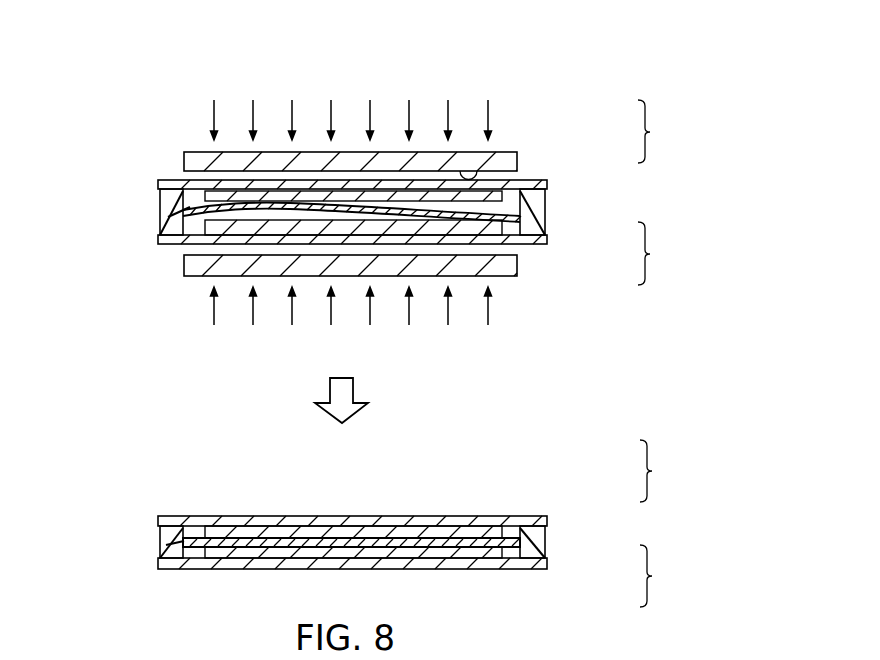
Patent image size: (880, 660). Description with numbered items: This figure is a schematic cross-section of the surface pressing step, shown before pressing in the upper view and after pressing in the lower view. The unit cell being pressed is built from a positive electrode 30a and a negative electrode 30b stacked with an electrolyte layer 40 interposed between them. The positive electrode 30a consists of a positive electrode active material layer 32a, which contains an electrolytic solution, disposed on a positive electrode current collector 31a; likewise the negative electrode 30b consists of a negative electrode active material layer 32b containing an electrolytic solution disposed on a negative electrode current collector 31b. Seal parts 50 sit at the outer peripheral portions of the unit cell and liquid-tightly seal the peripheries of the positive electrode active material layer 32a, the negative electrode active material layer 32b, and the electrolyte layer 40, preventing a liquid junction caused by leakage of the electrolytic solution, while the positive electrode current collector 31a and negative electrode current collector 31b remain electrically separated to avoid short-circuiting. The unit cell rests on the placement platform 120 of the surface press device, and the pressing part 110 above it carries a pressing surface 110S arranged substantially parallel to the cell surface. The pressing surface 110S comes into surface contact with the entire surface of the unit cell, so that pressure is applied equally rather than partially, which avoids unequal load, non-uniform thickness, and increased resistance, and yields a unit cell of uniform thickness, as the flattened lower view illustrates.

The pressing part 110 is at (205, 160).
The pressing surface 110S is at (467, 172).
The placement platform 120 is at (197, 263).
The positive electrode 30a is at (431, 301).
The negative electrode 30b is at (432, 413).
The positive electrode current collector 31a is at (545, 181).
The positive electrode active material layer 32a is at (545, 192).
The negative electrode current collector 31b is at (545, 241).
The negative electrode active material layer 32b is at (545, 226).
The electrolyte layer 40 is at (172, 215).
The seal part 50 is at (545, 212).